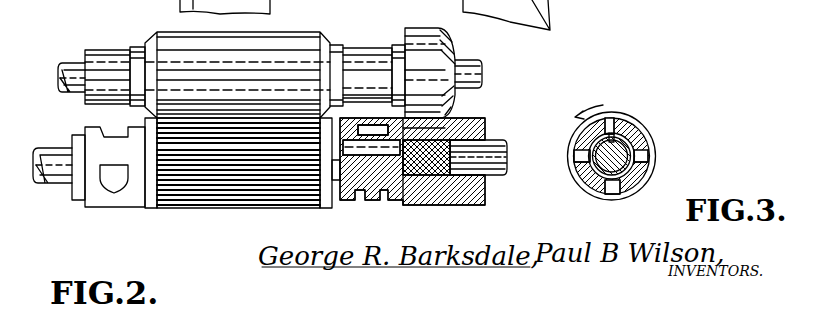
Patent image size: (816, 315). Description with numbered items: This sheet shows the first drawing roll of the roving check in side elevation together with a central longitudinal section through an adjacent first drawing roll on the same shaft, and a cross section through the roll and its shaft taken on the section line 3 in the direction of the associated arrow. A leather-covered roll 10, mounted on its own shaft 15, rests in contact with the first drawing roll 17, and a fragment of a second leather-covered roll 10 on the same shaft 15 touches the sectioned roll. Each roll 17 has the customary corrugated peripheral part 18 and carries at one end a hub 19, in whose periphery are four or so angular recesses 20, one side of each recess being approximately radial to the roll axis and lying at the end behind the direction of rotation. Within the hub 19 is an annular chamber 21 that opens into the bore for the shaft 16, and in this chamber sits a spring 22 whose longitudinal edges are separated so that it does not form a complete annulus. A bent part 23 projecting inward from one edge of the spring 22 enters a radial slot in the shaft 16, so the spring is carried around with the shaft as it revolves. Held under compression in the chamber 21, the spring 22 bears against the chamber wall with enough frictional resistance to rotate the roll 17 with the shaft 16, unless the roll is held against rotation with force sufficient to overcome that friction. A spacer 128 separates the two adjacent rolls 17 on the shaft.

In FIG. 2, the section line 3— 3 is at (115, 105).
In FIG. 2, the leather-covered roll 10 is at (170, 43).
In FIG. 2, the shaft 15 is at (72, 73).
In FIG. 2, the shaft 16 is at (53, 184).
In FIG. 3, the shaft 16 is at (602, 162).
In FIG. 2, the first drawing roll 17 is at (155, 206).
In FIG. 3, the first drawing roll 17 is at (587, 195).
In FIG. 2, the corrugated peripheral part 18 is at (223, 202).
In FIG. 2, the hub 19 is at (135, 196).
In FIG. 3, the hub 19 is at (582, 166).
In FIG. 2, the angular recesses 20 is at (102, 128).
In FIG. 3, the angular recesses 20 is at (620, 125).
In FIG. 2, the annular chamber 21 is at (390, 200).
In FIG. 3, the annular chamber 21 is at (628, 135).
In FIG. 2, the spring 22 is at (325, 205).
In FIG. 3, the spring 22 is at (627, 180).
In FIG. 2, the bent part of the spring 23 is at (432, 137).
In FIG. 3, the bent part of the spring 23 is at (633, 147).
In FIG. 2, the spacer 128 is at (78, 200).